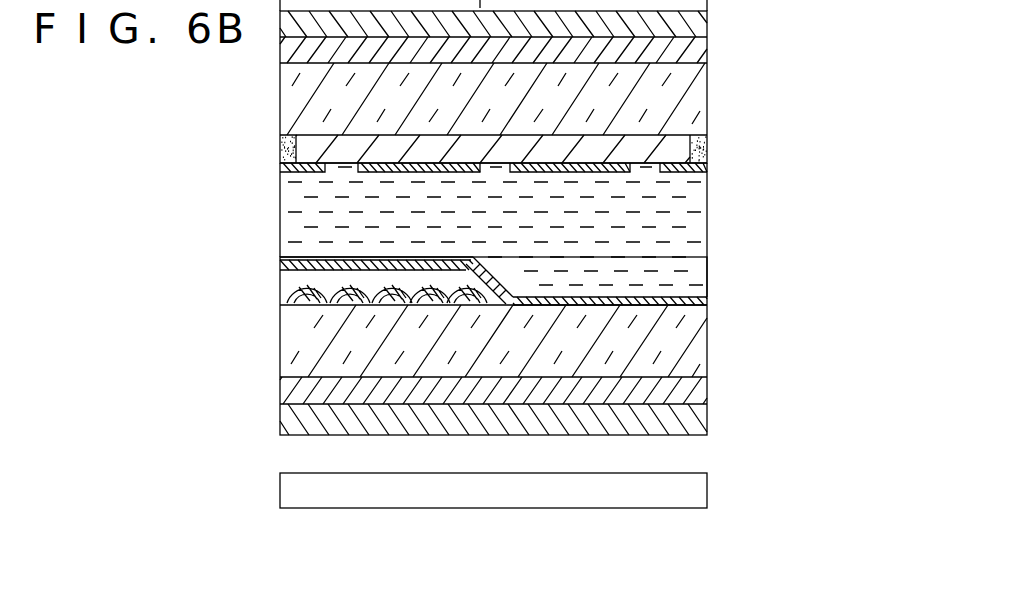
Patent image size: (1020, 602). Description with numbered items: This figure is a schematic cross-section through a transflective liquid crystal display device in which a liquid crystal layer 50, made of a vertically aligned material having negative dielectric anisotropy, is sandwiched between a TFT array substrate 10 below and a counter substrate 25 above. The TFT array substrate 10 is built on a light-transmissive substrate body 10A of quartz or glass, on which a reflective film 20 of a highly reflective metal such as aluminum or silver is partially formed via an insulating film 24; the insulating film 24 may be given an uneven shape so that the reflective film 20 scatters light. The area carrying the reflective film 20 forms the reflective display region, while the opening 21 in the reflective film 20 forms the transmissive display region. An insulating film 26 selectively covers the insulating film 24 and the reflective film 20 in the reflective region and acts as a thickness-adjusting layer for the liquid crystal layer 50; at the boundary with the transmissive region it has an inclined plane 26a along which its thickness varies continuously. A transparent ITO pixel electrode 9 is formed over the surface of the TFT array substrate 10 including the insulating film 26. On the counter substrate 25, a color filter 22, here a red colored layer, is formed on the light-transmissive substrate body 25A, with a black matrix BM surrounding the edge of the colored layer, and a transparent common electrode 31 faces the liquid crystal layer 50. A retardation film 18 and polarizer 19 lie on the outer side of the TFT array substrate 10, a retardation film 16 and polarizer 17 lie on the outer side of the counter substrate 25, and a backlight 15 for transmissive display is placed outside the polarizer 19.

The polarizer 17 is at (708, 17).
The retardation film 16 is at (708, 43).
The substrate body 25A is at (708, 92).
The color filter 22 is at (708, 130).
The black matrix BM is at (708, 148).
The common electrode 31 is at (708, 167).
The liquid crystal layer 50 is at (708, 225).
The pixel electrode 9 is at (708, 296).
The substrate body 10A is at (708, 335).
The retardation film 18 is at (708, 383).
The polarizer 19 is at (708, 413).
The backlight 15 is at (708, 485).
The counter substrate 25 is at (272, 15).
The reflective film 20 is at (280, 262).
The insulating film 26 is at (283, 282).
The insulating film 24 is at (280, 297).
The TFT array substrate 10 is at (263, 260).
The opening 21 is at (496, 292).
The inclined plane 26a is at (512, 286).